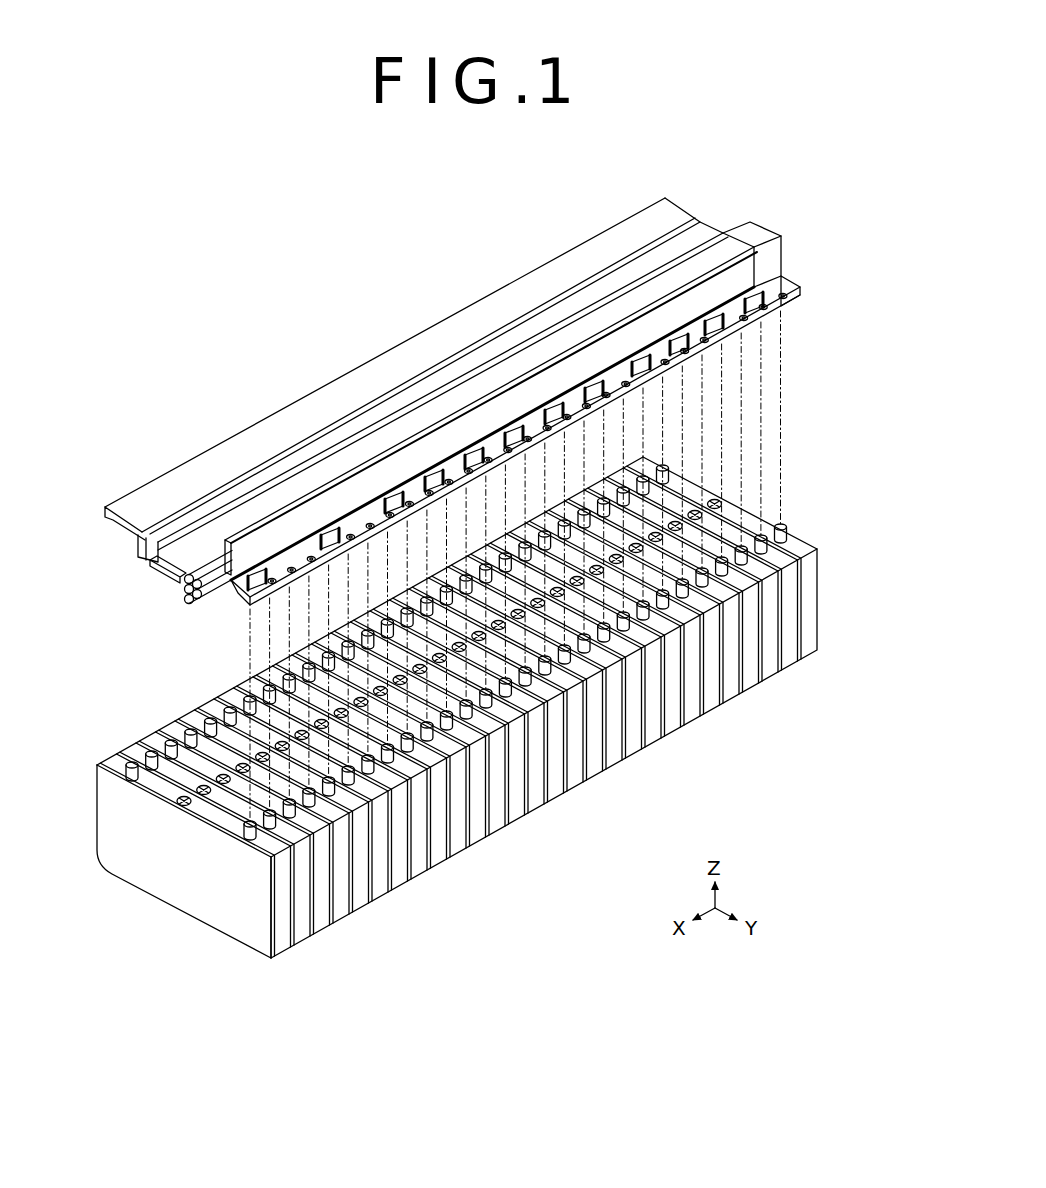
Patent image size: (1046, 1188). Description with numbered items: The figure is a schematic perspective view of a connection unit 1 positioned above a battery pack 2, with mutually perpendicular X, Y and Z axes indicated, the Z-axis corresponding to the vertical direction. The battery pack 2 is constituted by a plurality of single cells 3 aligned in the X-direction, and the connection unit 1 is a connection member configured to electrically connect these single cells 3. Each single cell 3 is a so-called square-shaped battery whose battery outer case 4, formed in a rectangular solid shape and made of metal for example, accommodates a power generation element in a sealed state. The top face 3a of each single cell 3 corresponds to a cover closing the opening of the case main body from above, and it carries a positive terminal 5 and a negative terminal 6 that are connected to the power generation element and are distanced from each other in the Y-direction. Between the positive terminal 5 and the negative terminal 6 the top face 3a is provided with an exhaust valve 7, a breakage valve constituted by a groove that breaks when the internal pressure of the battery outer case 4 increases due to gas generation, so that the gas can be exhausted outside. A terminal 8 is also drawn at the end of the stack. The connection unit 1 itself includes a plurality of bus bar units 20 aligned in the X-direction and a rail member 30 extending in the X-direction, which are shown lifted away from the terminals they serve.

The connection unit 1 is at (452, 379).
The rail member 30 is at (710, 212).
The battery pack 2 is at (187, 689).
The single cell 3 is at (450, 732).
The top face 3a is at (106, 762).
The battery outer case 4 is at (96, 789).
The positive terminal 5 is at (127, 766).
The negative terminal 6 is at (147, 755).
The exhaust valve 7 is at (190, 806).
The output terminal 8 is at (666, 465).
The bus bar unit 20 is at (268, 602).